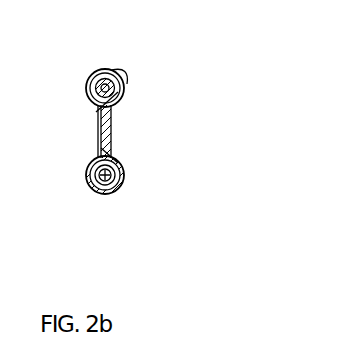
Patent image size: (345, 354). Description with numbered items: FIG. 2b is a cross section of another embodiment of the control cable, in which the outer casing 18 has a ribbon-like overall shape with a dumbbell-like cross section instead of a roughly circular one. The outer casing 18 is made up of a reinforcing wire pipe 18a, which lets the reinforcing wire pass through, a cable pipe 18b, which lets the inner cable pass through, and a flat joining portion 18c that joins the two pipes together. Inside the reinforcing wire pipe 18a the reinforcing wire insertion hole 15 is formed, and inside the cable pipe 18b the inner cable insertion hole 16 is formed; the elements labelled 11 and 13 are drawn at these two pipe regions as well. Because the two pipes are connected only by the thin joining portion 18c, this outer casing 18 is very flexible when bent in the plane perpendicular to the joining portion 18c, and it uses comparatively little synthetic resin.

The first mounting member 11 is at (87, 93).
The second mounting member 13 is at (87, 182).
The reinforcing wire insertion hole 15 is at (104, 67).
The inner cable insertion hole 16 is at (107, 194).
The outer casing 18 is at (212, 32).
The reinforcing wire pipe 18a is at (121, 79).
The cable pipe 18b is at (125, 178).
The flat joining portion 18c is at (112, 122).